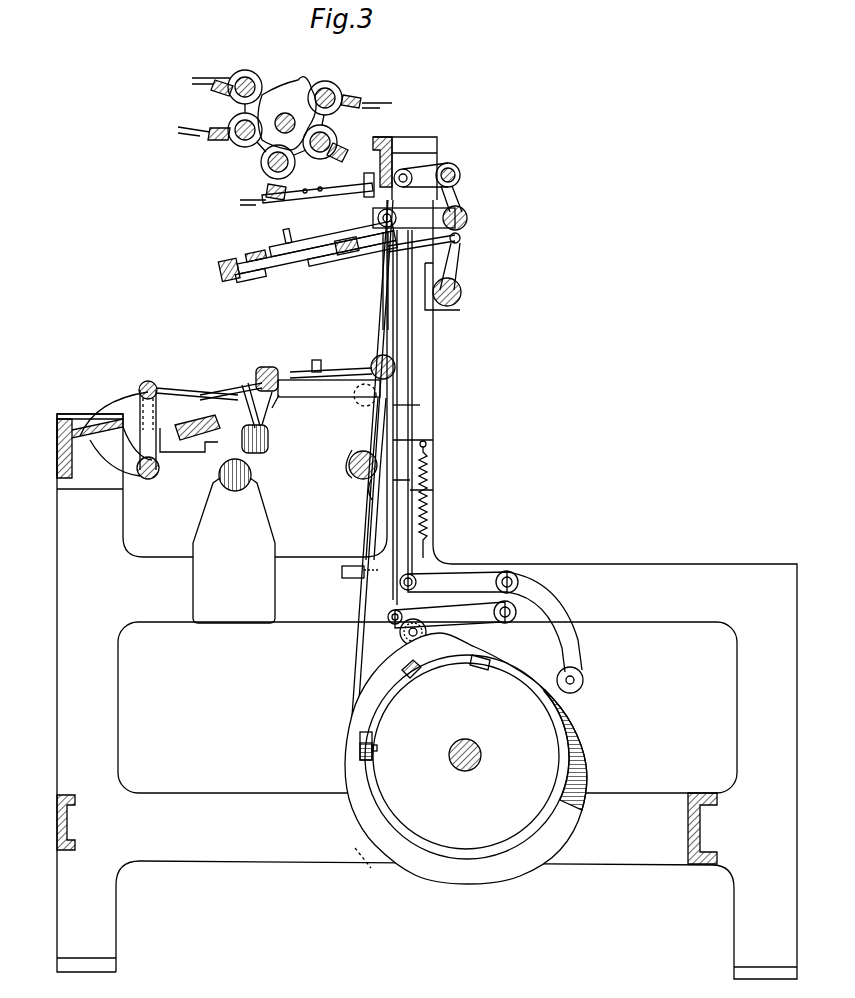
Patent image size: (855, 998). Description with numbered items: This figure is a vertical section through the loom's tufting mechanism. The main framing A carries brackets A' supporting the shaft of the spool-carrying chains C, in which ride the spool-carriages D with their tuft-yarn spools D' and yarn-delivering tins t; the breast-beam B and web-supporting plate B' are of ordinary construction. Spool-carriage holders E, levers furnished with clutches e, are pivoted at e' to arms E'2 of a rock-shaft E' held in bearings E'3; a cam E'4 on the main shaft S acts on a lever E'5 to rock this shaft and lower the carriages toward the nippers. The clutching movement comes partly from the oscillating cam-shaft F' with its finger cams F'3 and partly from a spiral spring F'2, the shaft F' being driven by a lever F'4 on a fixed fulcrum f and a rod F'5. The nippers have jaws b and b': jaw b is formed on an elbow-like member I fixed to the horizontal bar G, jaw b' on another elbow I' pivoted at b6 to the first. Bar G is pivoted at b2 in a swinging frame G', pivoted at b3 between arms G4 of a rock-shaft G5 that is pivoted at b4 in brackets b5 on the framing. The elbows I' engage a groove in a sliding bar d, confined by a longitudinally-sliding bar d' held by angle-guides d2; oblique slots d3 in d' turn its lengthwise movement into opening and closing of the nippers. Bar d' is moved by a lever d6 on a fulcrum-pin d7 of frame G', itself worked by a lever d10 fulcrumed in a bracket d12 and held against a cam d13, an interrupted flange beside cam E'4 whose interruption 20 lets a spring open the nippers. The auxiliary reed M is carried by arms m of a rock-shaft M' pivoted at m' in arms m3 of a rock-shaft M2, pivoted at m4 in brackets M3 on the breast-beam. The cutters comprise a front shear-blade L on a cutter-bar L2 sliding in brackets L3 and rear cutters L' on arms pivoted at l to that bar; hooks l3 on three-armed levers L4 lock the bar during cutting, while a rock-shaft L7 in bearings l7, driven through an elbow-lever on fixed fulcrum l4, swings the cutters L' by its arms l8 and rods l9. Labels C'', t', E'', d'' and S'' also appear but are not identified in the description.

The main framing A is at (427, 589).
The brackets A' is at (394, 160).
The breast-beam B is at (90, 451).
The web-supporting plate B' is at (190, 425).
The spool-carrying chains C is at (284, 113).
The central roller C'' is at (287, 113).
The spool-carriages D is at (274, 148).
The tuft-yarn spools D' is at (295, 125).
The tins t is at (270, 132).
The tension arm t' is at (285, 114).
The clutches e is at (317, 191).
The pivots e' is at (363, 173).
The spool-carriage holders E is at (362, 264).
The rock-shaft E' is at (436, 219).
The arms of rock-shaft E'2 is at (439, 218).
The bearings E'3 is at (482, 206).
The cam E'4 is at (462, 761).
The lever E'5 is at (452, 623).
The rod E'' is at (389, 416).
The oscillating cam-shaft F' is at (471, 523).
The spiral spring F'2 is at (418, 181).
The cams F'3 is at (467, 197).
The lever F'4 is at (496, 632).
The rod F'5 is at (407, 396).
The fixed fulcrum f is at (508, 571).
The horizontal bar G is at (267, 370).
The swinging frame G' is at (336, 369).
The arms of rock-shaft G4 is at (359, 413).
The rock-shaft G5 is at (352, 470).
The sliding bar d is at (261, 439).
The longitudinally-sliding bar d' is at (252, 357).
The angle-guides d2 is at (304, 357).
The oblique slots d3 is at (372, 740).
The lever d6 is at (331, 367).
The fulcrum-pin d7 is at (325, 368).
The lever d10 is at (380, 420).
The stop d'' is at (349, 569).
The bracket d12 is at (380, 575).
The cam d13 is at (546, 769).
The nipper jaw b is at (220, 423).
The nipper jaw b' is at (236, 381).
The pivot b2 is at (275, 408).
The pivot b3 is at (376, 404).
The pivot b4 is at (360, 480).
The brackets b5 is at (370, 486).
The pivot b6 is at (242, 432).
The elbow-like member I is at (248, 405).
The elbow-like member I' is at (231, 385).
The auxiliary reed M is at (156, 396).
The rock-shaft M' is at (148, 379).
The rock-shaft M2 is at (155, 476).
The brackets M3 is at (110, 438).
The arms m is at (197, 386).
The pivots m' is at (123, 387).
The arms m3 is at (146, 430).
The pivots m4 is at (140, 478).
The main shaft S is at (454, 755).
The roller S'' is at (234, 536).
The front cutter L is at (306, 253).
The rear cutters L' is at (296, 280).
The cutter-bar L2 is at (238, 262).
The brackets L3 is at (340, 262).
The three-armed levers L4 is at (332, 250).
The rock-shaft L7 is at (458, 306).
The pivots l is at (260, 291).
The hooks l3 is at (290, 246).
The fixed fulcrum l4 is at (355, 246).
The bearings l7 is at (461, 290).
The arms l8 is at (468, 262).
The rods l9 is at (424, 243).
The interruption 20 is at (446, 665).